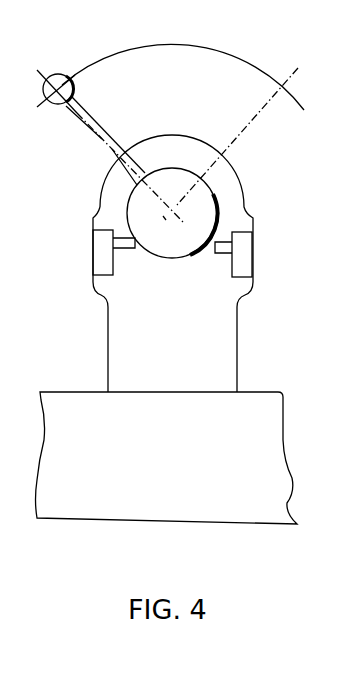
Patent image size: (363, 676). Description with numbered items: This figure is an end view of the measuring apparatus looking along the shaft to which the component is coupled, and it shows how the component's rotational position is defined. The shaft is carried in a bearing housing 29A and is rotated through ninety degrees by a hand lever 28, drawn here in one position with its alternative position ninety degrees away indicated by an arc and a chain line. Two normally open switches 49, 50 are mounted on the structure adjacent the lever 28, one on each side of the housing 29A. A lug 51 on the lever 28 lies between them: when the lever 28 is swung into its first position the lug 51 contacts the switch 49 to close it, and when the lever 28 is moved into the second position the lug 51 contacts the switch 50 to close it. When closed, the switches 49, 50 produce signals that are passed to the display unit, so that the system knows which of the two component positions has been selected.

The hand lever 28 is at (62, 72).
The bearing housing 29A is at (238, 183).
The switch 49 is at (245, 258).
The switch 50 is at (102, 262).
The lug 51 is at (212, 248).